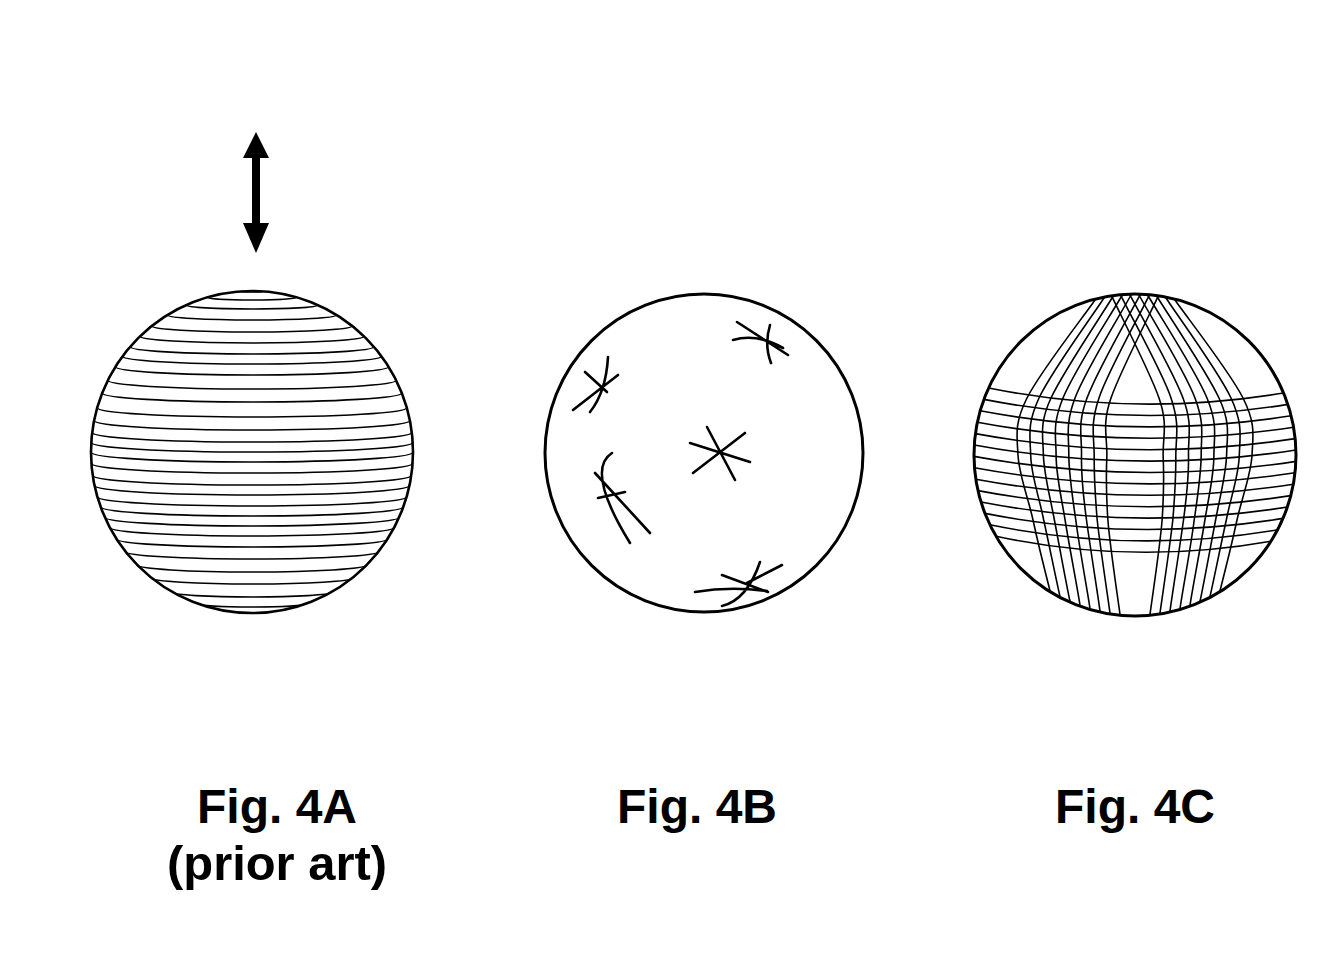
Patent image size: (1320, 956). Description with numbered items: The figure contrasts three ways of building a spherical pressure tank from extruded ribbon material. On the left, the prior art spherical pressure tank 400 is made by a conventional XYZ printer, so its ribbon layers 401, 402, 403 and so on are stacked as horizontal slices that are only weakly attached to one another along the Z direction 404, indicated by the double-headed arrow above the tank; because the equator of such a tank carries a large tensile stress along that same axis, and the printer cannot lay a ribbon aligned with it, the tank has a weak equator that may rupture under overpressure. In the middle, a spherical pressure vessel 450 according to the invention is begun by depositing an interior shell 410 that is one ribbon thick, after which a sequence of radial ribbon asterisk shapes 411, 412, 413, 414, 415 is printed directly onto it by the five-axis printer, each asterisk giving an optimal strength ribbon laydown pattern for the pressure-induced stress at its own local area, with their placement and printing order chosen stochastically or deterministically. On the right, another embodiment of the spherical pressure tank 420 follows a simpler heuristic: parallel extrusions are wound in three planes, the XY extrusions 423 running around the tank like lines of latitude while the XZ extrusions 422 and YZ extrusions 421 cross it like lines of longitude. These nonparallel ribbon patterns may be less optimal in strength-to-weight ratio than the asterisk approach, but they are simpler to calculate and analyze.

In FIG. 4A, the spherical pressure tank 400 is at (112, 367).
In FIG. 4A, the layer 401 is at (313, 587).
In FIG. 4A, the layer 402 is at (323, 574).
In FIG. 4A, the layer 403 is at (333, 563).
In FIG. 4A, the Z direction 404 is at (288, 203).
In FIG. 4B, the interior shell 410 is at (643, 337).
In FIG. 4B, the spherical pressure vessel 450 is at (684, 293).
In FIG. 4B, the radial ribbon asterisk shape 411 is at (760, 318).
In FIG. 4B, the radial ribbon asterisk shape 412 is at (751, 443).
In FIG. 4B, the radial ribbon asterisk shape 413 is at (587, 465).
In FIG. 4B, the radial ribbon asterisk shape 414 is at (585, 370).
In FIG. 4B, the radial ribbon asterisk shape 415 is at (687, 588).
In FIG. 4C, the spherical pressure tank 420 is at (1057, 317).
In FIG. 4C, the YZ plane extrusions 421 is at (1045, 567).
In FIG. 4C, the XZ plane extrusions 422 is at (1188, 592).
In FIG. 4C, the XY plane extrusions 423 is at (1005, 480).